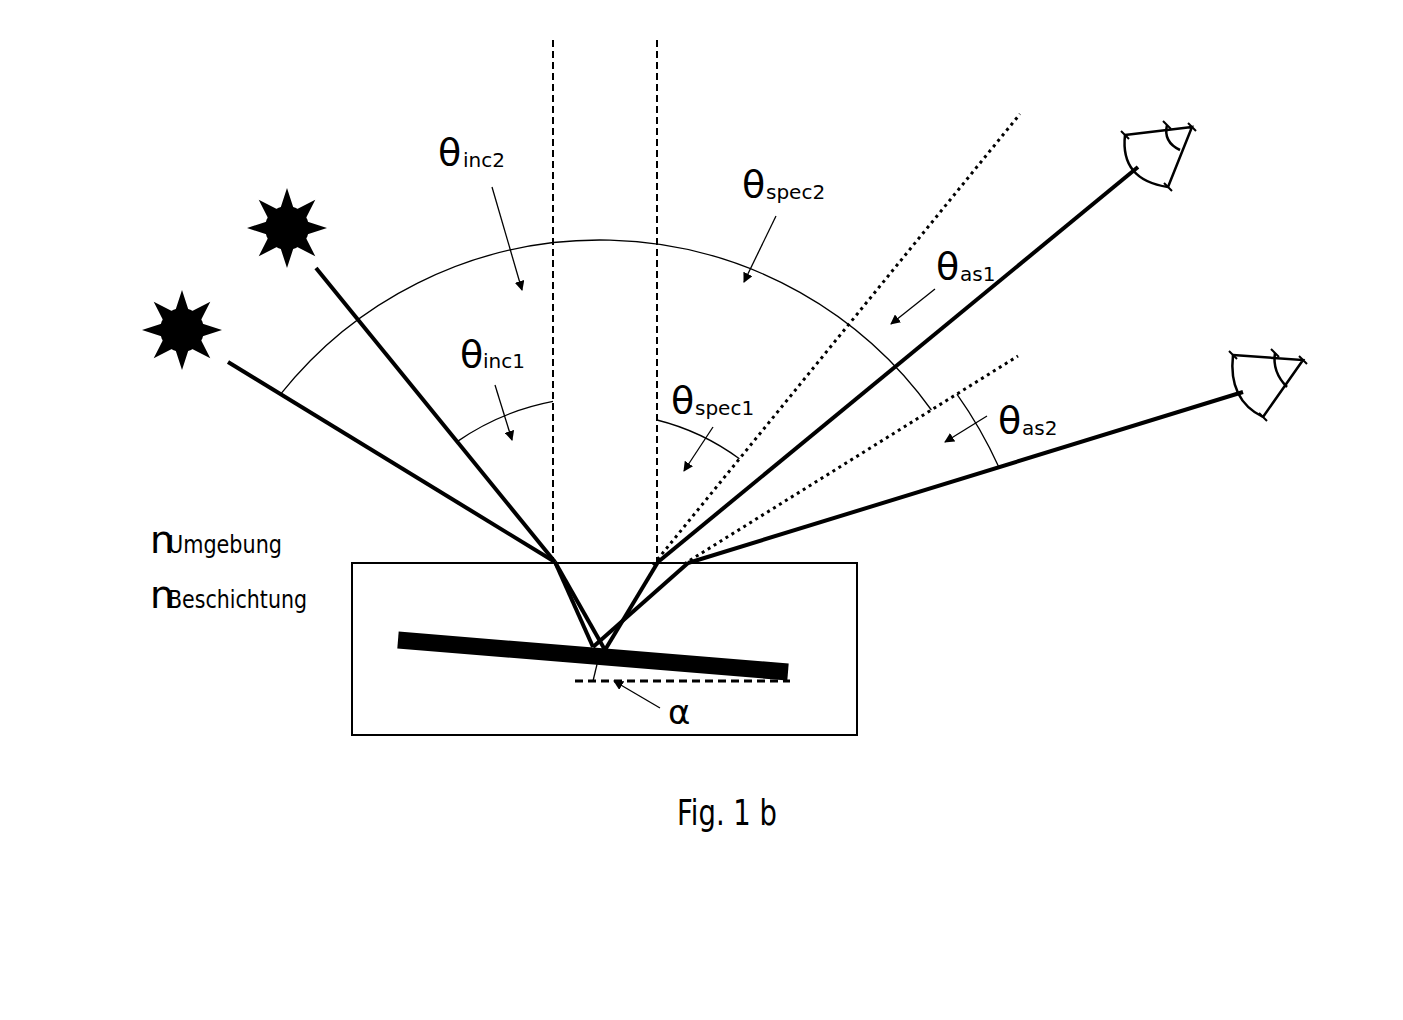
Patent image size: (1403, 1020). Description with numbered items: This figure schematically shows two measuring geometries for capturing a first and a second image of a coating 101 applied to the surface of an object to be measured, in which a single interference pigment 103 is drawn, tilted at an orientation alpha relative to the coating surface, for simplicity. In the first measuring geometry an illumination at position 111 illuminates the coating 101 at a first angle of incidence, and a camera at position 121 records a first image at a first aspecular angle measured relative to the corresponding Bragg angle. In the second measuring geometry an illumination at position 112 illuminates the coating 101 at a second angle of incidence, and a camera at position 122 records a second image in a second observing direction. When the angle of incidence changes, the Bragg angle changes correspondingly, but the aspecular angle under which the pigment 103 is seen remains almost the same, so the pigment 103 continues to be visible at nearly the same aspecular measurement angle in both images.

The coating 101 is at (837, 624).
The interference pigment 103 is at (398, 638).
The illumination position 111 is at (288, 190).
The illumination position 112 is at (183, 290).
The camera position 121 is at (1182, 163).
The camera position 122 is at (1282, 395).